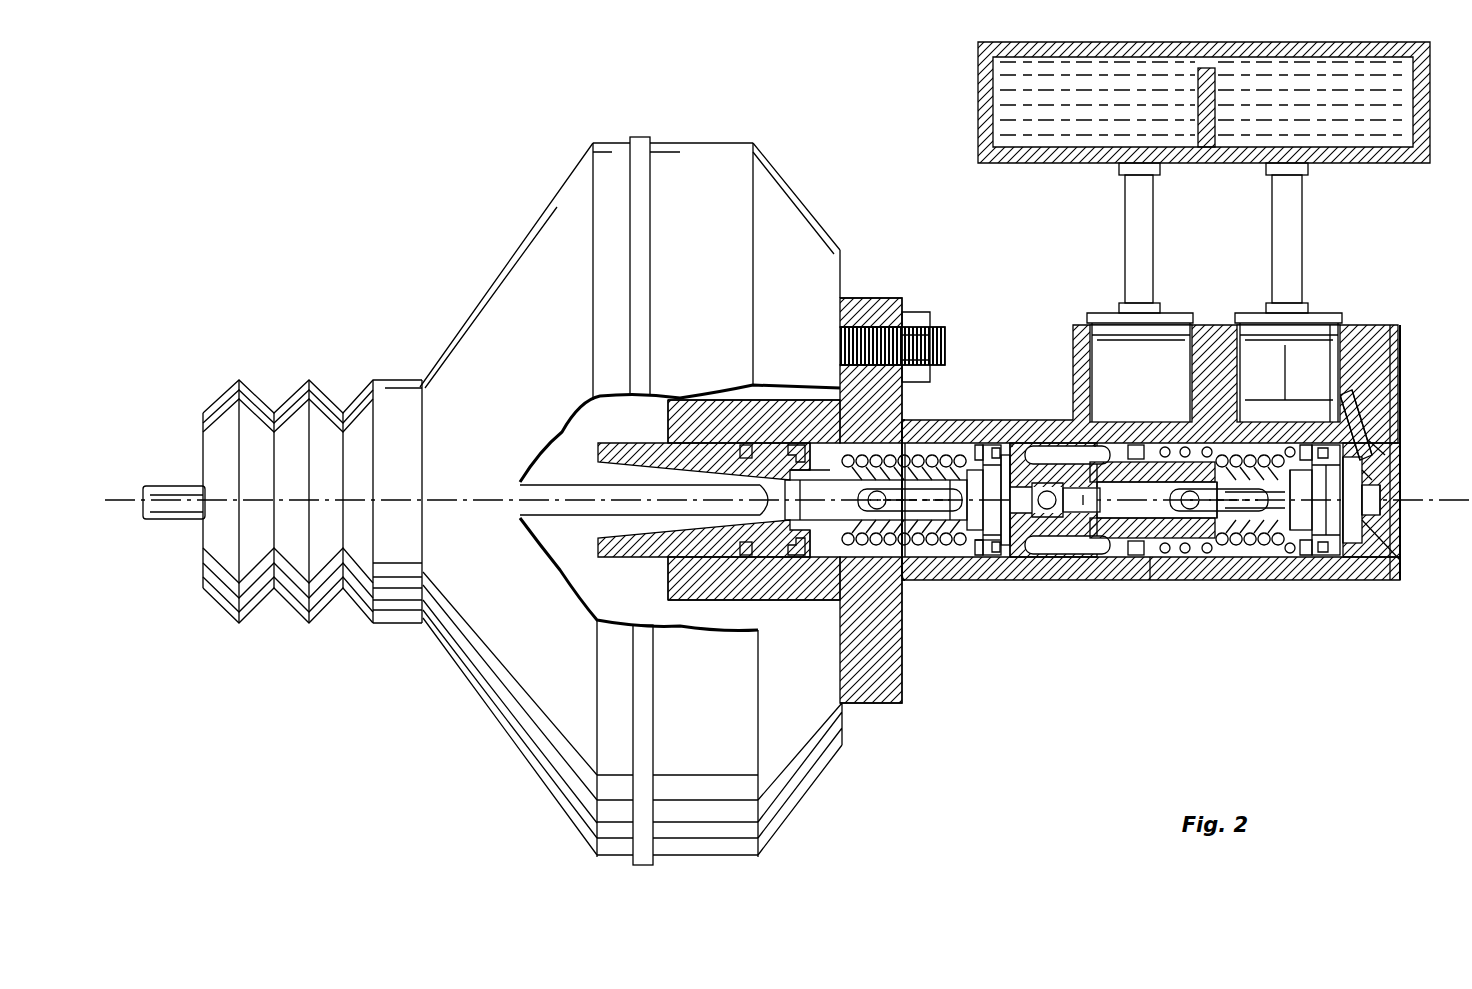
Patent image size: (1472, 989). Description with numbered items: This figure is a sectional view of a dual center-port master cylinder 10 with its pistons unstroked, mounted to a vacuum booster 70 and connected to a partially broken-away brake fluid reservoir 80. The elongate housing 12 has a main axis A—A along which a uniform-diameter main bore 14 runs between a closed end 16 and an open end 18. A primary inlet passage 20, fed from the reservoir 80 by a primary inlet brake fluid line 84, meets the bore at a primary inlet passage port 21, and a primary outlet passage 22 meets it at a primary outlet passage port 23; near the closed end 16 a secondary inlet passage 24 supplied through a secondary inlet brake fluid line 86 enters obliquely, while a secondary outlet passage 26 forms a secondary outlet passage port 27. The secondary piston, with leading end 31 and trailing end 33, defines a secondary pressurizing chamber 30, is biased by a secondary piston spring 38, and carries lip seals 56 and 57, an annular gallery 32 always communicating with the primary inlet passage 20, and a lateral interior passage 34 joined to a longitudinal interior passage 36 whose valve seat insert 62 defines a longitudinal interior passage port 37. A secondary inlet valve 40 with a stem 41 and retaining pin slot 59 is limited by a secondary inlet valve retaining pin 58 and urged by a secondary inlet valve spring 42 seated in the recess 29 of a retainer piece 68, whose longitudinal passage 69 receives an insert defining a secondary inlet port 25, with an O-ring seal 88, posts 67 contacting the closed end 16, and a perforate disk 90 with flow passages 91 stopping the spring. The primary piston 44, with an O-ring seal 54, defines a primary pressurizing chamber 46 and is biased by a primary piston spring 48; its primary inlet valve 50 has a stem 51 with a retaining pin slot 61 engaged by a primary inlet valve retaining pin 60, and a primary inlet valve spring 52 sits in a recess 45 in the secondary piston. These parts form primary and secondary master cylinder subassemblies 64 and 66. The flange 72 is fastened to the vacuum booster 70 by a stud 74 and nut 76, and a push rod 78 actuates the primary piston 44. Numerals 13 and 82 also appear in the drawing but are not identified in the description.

The main axis A is at (133, 500).
The master cylinder 10 is at (993, 262).
The housing 12 is at (1396, 582).
The secondary piston 13 is at (1135, 540).
The main bore 14 is at (933, 520).
The closed end 16 is at (1366, 510).
The open end 18 is at (460, 600).
The primary inlet passage 20 is at (1103, 445).
The primary inlet passage port 21 is at (1125, 445).
The primary outlet passage 22 is at (975, 470).
The primary outlet passage port 23 is at (979, 445).
The secondary inlet passage 24 is at (1385, 420).
The secondary inlet port 25 is at (1368, 472).
The secondary outlet passage 26 is at (1250, 445).
The secondary outlet passage port 27 is at (1282, 445).
The recess 29 is at (1345, 560).
The secondary pressurizing chamber 30 is at (1268, 556).
The leading end 31 is at (1242, 512).
The annular gallery 32 is at (1040, 445).
The trailing end 33 is at (977, 560).
The lateral interior passage 34 is at (1152, 582).
The longitudinal interior passage 36 is at (1100, 560).
The longitudinal interior passage port 37 is at (1075, 560).
The secondary piston spring 38 is at (1230, 560).
The secondary inlet valve 40 is at (1392, 560).
The stem 41 is at (1240, 445).
The secondary inlet valve spring 42 is at (1300, 445).
The primary piston 44 is at (740, 557).
The recess 45 is at (1005, 455).
The primary pressurizing chamber 46 is at (912, 582).
The primary piston spring 48 is at (818, 600).
The primary inlet valve 50 is at (990, 445).
The stem 51 is at (900, 512).
The primary inlet valve spring 52 is at (1055, 556).
The seal 54 is at (745, 445).
The lip seal 56 is at (795, 445).
The lip seal 57 is at (996, 448).
The secondary inlet valve retaining pin 58 is at (1195, 512).
The secondary inlet valve retaining pin slot 59 is at (1305, 560).
The primary inlet valve retaining pin 60 is at (815, 445).
The primary inlet valve retaining pin slot 61 is at (877, 490).
The valve seat insert 62 is at (1018, 450).
The primary master cylinder subassembly 64 is at (832, 445).
The secondary master cylinder subassembly 66 is at (1215, 340).
The posts 67 is at (1358, 543).
The retainer piece 68 is at (1332, 582).
The longitudinal passage 69 is at (1378, 445).
The vacuum booster 70 is at (452, 262).
The flange 72 is at (868, 298).
The stud 74 is at (932, 318).
The nut 76 is at (906, 327).
The push rod 78 is at (552, 432).
The brake fluid reservoir 80 is at (1398, 165).
The brake fluid 82 is at (1352, 110).
The primary inlet brake fluid line 84 is at (1125, 216).
The secondary inlet brake fluid line 86 is at (1272, 216).
The O-ring seal 88 is at (1346, 392).
The perforate disk 90 is at (1268, 445).
The flow passage 91 is at (962, 560).